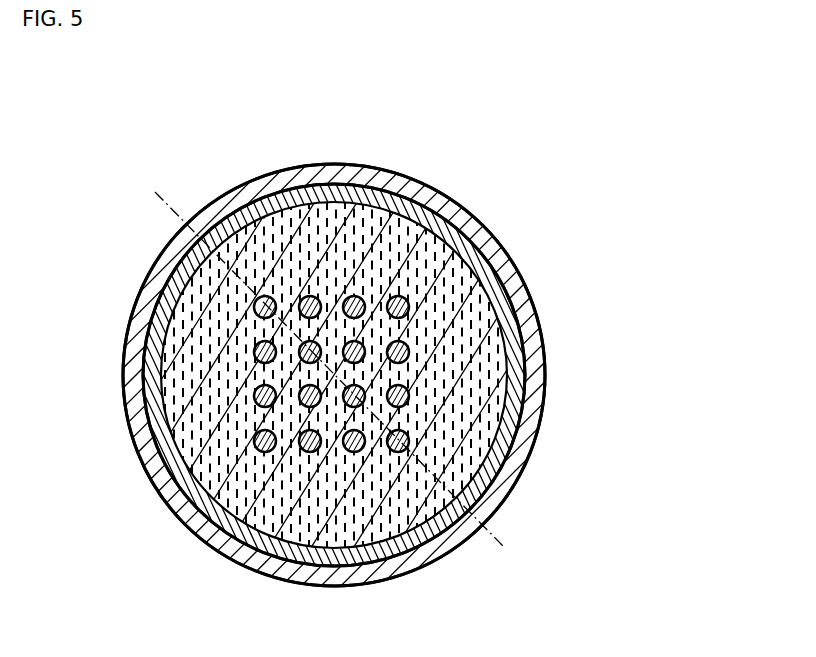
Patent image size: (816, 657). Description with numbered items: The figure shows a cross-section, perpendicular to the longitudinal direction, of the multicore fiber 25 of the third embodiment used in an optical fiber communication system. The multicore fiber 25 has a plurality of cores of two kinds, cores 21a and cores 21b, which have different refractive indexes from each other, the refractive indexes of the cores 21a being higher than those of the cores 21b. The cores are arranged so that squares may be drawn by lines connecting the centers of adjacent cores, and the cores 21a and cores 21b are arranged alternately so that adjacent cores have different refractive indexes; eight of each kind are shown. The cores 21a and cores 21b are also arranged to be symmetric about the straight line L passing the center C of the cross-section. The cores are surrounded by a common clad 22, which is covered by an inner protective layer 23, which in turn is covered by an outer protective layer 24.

The multicore fiber 25 is at (540, 142).
The inner protective layer 23 is at (362, 166).
The outer protective layer 24 is at (292, 174).
The clad 22 is at (517, 347).
The cores 21a is at (408, 299).
The cores 21b is at (262, 300).
The center C is at (492, 226).
The straight line L is at (324, 364).